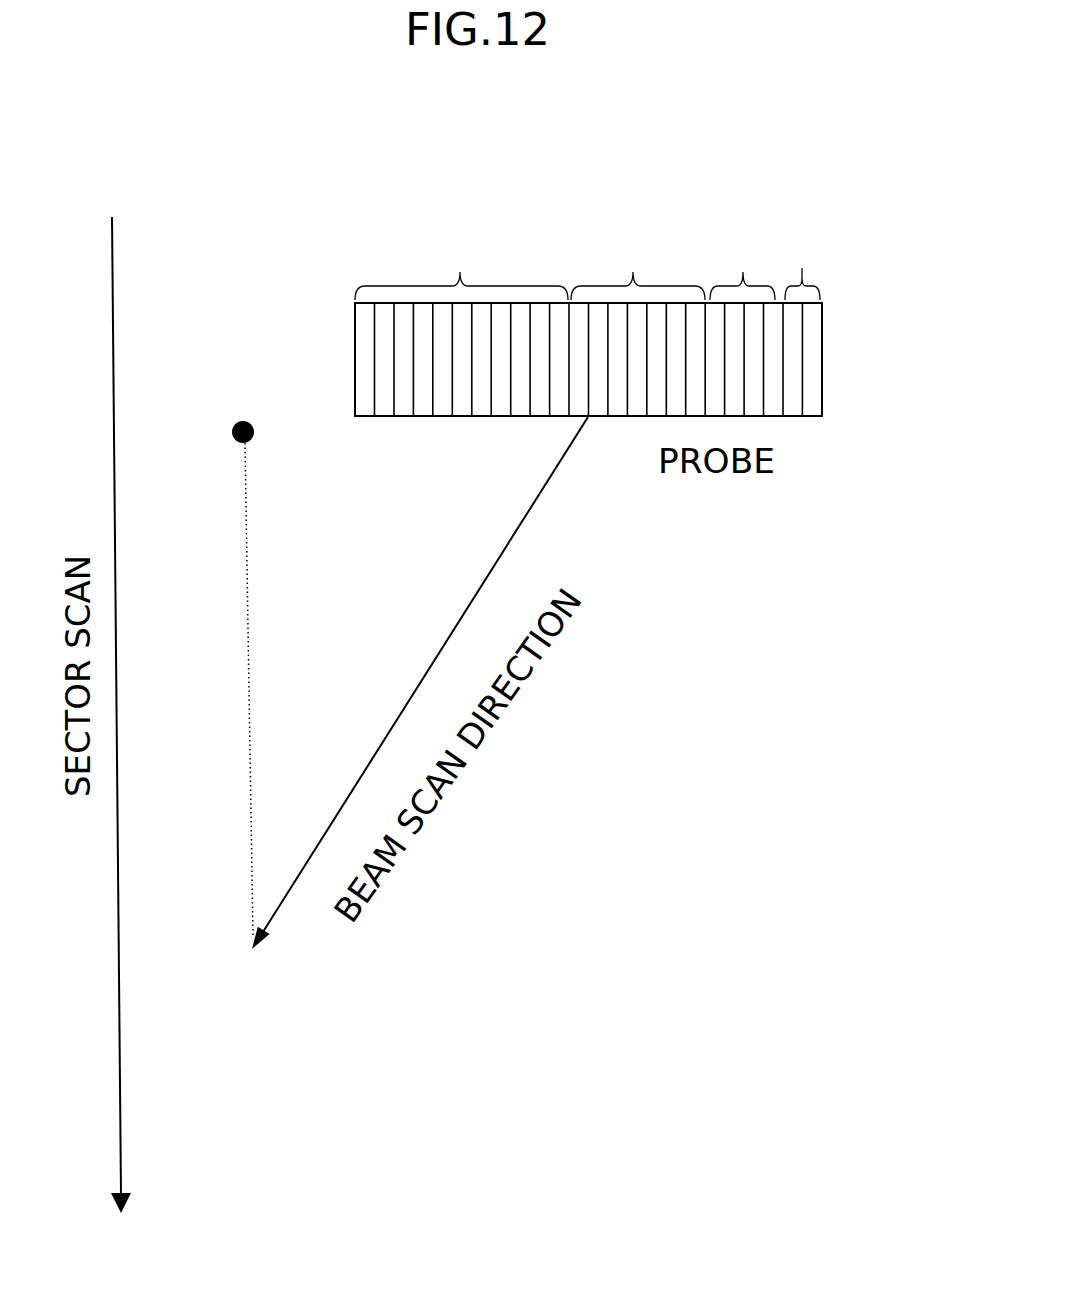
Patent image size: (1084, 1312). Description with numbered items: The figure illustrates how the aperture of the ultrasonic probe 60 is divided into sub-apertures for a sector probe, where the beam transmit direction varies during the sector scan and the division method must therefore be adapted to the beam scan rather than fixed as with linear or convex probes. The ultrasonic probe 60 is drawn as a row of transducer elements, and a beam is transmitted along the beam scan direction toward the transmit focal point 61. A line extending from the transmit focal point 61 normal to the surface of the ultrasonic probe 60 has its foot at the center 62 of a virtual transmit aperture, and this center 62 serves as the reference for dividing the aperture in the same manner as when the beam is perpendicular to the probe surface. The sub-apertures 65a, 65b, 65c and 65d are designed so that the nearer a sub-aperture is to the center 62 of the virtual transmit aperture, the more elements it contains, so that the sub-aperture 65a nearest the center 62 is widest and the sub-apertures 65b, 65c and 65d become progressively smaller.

The ultrasonic probe 60 is at (822, 370).
The transmit focal point 61 is at (252, 949).
The center of virtual transmit aperture 62 is at (239, 420).
The sub-aperture 65a is at (461, 259).
The sub-aperture 65b is at (638, 258).
The sub-aperture 65c is at (754, 254).
The sub-aperture 65d is at (826, 265).